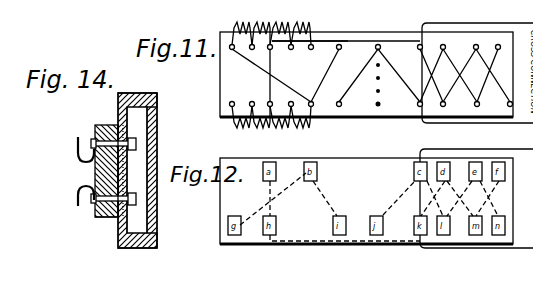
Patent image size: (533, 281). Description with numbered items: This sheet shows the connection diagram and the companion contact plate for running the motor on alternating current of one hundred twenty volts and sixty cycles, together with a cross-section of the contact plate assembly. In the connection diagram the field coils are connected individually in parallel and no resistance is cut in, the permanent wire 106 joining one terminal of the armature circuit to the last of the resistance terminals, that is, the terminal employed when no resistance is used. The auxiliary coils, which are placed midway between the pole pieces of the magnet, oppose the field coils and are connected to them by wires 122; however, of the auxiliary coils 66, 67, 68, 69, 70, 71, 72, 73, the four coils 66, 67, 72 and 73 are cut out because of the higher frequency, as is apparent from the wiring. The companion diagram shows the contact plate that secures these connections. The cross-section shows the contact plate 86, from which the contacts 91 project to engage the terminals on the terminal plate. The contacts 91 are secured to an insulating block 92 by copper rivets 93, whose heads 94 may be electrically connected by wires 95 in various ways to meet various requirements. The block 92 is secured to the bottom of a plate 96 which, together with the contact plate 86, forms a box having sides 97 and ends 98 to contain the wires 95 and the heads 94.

In FIG. 14, the contact plate 86 is at (158, 133).
In FIG. 14, the contacts 91 is at (78, 202).
In FIG. 14, the insulating block 92 is at (99, 218).
In FIG. 14, the copper rivets 93 is at (117, 124).
In FIG. 14, the rivet heads 94 is at (137, 199).
In FIG. 14, the wires 95 is at (128, 172).
In FIG. 14, the bottom plate 96 is at (122, 92).
In FIG. 14, the sides 97 is at (140, 93).
In FIG. 14, the ends 98 is at (133, 118).
In FIG. 11, the auxiliary coil 66 is at (303, 22).
In FIG. 11, the auxiliary coil 67 is at (283, 22).
In FIG. 11, the auxiliary coil 68 is at (262, 16).
In FIG. 11, the auxiliary coil 69 is at (235, 22).
In FIG. 11, the auxiliary coil 70 is at (309, 128).
In FIG. 11, the auxiliary coil 71 is at (287, 128).
In FIG. 11, the auxiliary coil 72 is at (263, 128).
In FIG. 11, the auxiliary coil 73 is at (237, 128).
In FIG. 11, the wire 106 is at (351, 92).
In FIG. 11, the wires 122 is at (348, 42).
In FIG. 12, the wires 122 is at (349, 241).